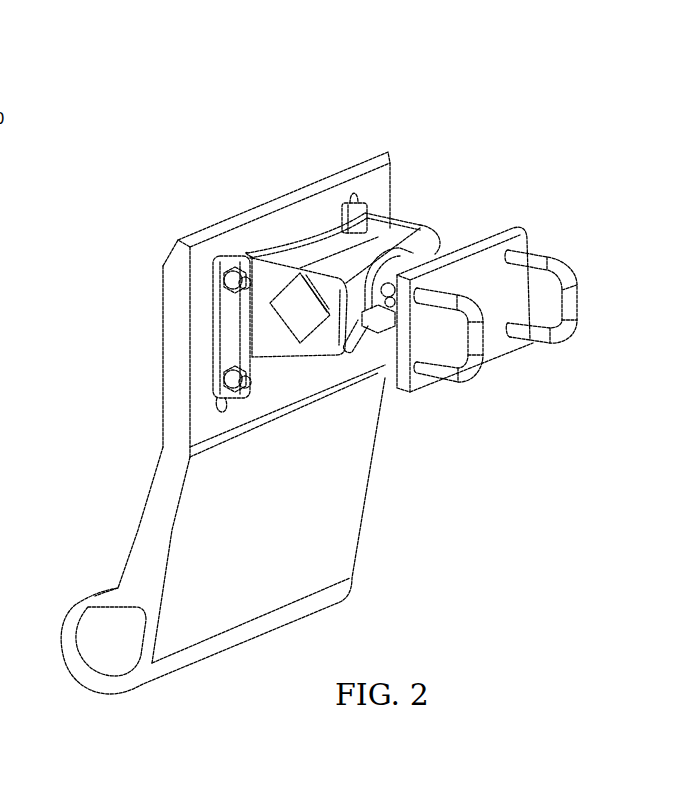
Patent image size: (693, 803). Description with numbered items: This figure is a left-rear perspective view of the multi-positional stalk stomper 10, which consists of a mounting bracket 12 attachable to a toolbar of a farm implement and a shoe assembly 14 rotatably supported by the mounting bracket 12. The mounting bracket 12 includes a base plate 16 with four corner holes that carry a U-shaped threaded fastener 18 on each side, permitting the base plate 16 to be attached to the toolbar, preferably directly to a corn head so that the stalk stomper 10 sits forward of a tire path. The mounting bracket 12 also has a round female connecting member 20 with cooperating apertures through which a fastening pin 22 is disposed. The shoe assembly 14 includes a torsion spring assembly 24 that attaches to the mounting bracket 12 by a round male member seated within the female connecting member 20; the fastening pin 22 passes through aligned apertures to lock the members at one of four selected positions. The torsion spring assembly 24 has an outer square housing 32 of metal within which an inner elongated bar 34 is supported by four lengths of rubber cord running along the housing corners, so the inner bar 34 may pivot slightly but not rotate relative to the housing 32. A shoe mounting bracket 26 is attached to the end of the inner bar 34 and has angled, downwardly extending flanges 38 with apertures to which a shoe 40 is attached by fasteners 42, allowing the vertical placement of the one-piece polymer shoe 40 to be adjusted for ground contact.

The multi-positional stalk stomper 10 is at (471, 501).
The mounting bracket 12 is at (526, 212).
The shoe assembly 14 is at (303, 161).
The base plate 16 is at (478, 247).
The U-shaped threaded fastener 18 is at (580, 283).
The female connecting member 20 is at (413, 250).
The fastening pin 22 is at (370, 350).
The torsion spring assembly 24 is at (402, 200).
The shoe mounting bracket 26 is at (309, 378).
The outer square housing 32 is at (332, 240).
The inner elongated bar 34 is at (282, 327).
The downwardly extending flanges 38 is at (213, 325).
The shoe 40 is at (143, 497).
The fasteners 42 is at (235, 272).